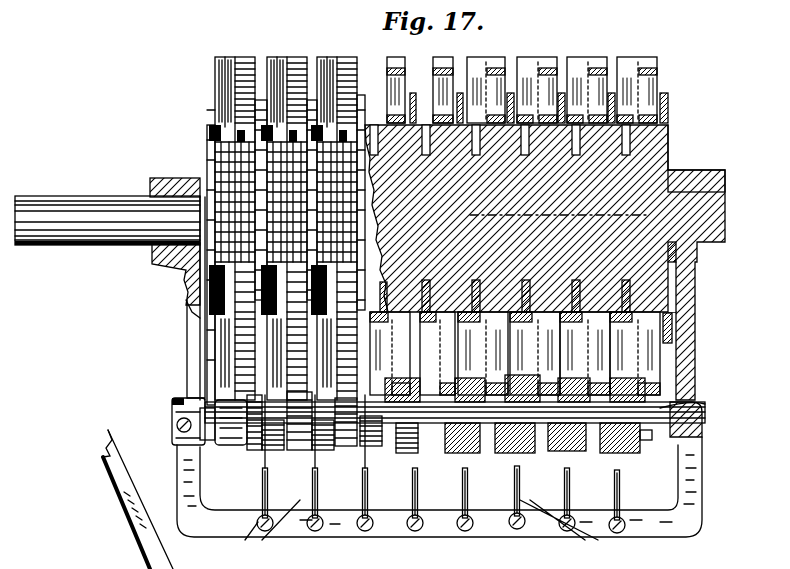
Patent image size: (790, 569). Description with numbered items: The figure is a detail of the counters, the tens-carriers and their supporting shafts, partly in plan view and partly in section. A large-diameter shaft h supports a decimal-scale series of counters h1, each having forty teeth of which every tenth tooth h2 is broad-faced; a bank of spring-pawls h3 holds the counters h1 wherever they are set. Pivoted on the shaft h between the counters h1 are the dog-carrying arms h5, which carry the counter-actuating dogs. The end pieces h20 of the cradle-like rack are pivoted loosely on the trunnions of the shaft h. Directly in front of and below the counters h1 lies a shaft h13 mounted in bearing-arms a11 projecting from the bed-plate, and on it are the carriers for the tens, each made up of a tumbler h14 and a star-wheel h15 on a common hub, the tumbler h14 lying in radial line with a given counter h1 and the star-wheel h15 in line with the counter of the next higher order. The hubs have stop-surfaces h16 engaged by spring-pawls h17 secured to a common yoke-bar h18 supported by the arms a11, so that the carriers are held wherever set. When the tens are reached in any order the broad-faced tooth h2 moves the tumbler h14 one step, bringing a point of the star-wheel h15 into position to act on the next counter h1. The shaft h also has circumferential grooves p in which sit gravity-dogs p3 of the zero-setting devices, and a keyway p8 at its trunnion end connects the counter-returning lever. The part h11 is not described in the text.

The shaft h is at (525, 142).
The counters h1 is at (348, 62).
The broad-faced tooth h2 is at (474, 62).
The spring-pawls h3 is at (355, 225).
The dog-carrying arms h5 is at (704, 312).
The lever bar h11 is at (148, 556).
The shaft h13 is at (705, 412).
The tumbler h14 is at (276, 452).
The star-wheel h15 is at (250, 450).
The stop-surfaces h16 is at (262, 420).
The spring-pawls h17 is at (422, 534).
The yoke-bar h18 is at (230, 534).
The end pieces h20 is at (200, 178).
The bearing-arms a11 is at (190, 362).
The circumferential grooves p is at (374, 136).
The gravity-dogs p3 is at (205, 320).
The keyway p8 is at (40, 190).